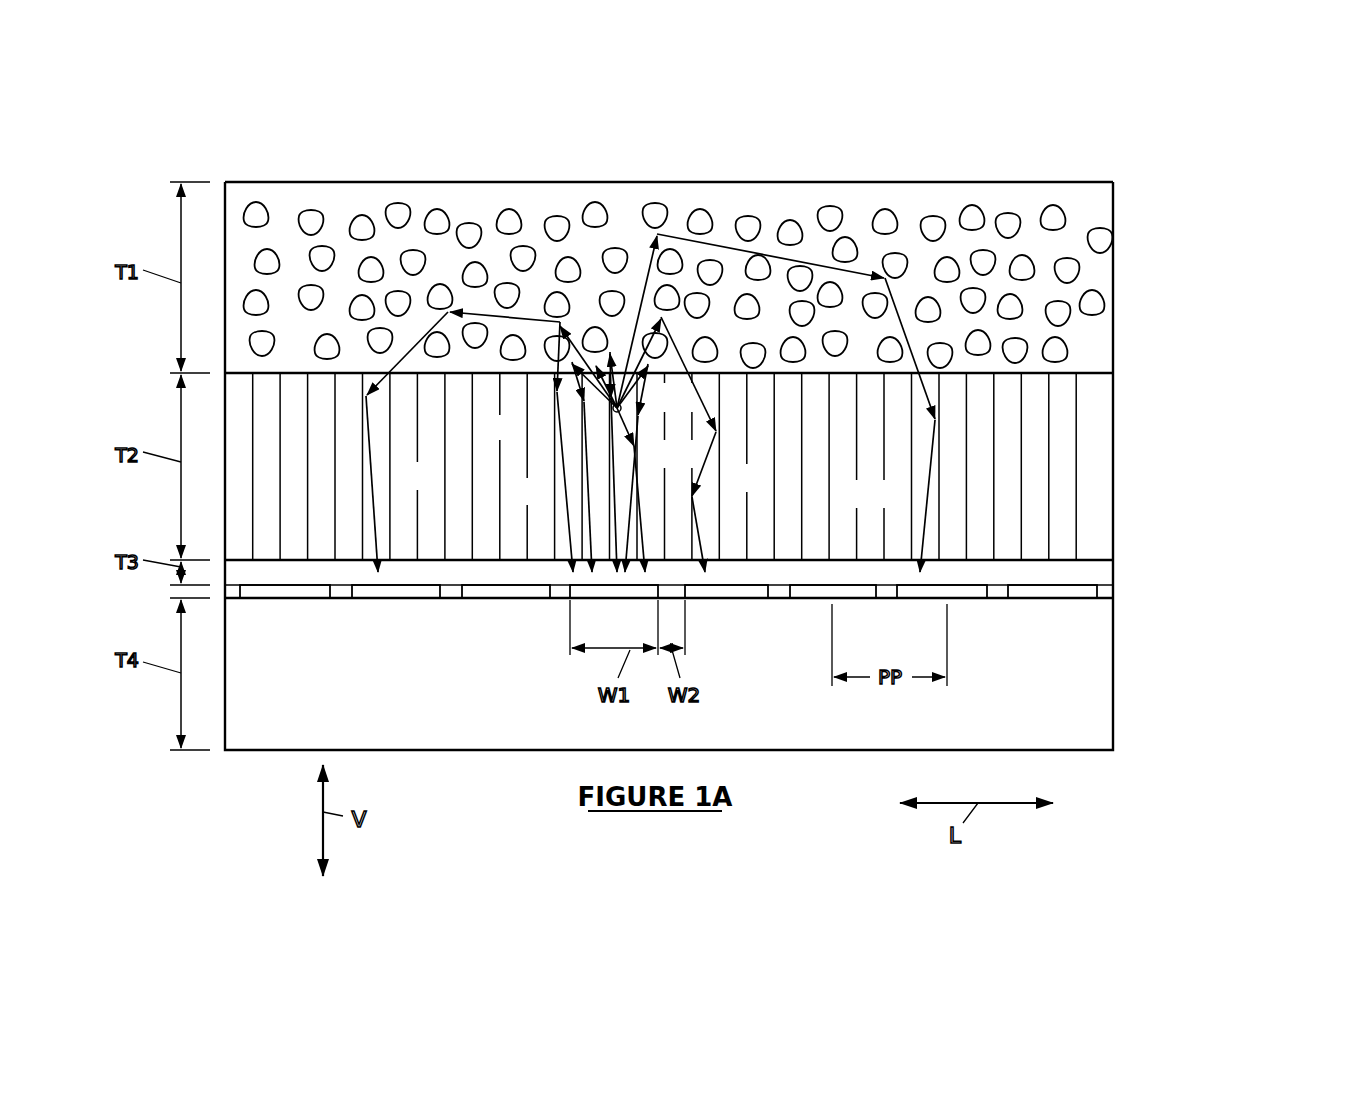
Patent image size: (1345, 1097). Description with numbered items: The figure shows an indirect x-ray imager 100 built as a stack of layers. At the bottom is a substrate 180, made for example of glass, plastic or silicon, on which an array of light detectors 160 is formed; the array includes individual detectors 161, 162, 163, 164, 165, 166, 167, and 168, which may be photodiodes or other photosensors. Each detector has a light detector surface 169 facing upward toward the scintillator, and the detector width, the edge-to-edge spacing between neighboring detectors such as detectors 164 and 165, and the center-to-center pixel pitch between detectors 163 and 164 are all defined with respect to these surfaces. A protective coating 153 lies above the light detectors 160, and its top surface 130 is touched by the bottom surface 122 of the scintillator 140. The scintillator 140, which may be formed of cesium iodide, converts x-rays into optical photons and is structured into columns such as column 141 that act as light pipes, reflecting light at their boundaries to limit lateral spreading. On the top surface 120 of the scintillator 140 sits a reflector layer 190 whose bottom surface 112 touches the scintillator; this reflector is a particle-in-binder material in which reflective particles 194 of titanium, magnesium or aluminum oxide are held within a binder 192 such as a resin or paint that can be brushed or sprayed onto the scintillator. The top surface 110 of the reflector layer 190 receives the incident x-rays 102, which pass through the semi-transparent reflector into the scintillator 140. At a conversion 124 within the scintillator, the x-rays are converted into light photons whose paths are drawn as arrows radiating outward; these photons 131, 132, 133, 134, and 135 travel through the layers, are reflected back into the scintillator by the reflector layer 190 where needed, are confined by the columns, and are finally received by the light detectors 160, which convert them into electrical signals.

The imager 100 is at (1026, 90).
The incident x-rays 102 is at (717, 124).
The top surface 110 is at (1098, 182).
The bottom surface 112 is at (1055, 374).
The top surface 120 is at (775, 438).
The bottom surface 122 is at (1063, 561).
The conversion 124 is at (612, 410).
The top surface 130 is at (1103, 559).
The photon 131 is at (566, 484).
The photon 132 is at (642, 404).
The photon 133 is at (708, 467).
The photon 134 is at (373, 471).
The photon 135 is at (926, 485).
The scintillator 140 is at (1087, 453).
The column 141 is at (648, 462).
The protective coating 153 is at (1097, 580).
The light detectors 160 is at (775, 625).
The detector 161 is at (1037, 595).
The detector 162 is at (970, 595).
The detector 163 is at (865, 595).
The detector 164 is at (730, 595).
The detector 165 is at (620, 593).
The detector 166 is at (495, 595).
The detector 167 is at (390, 595).
The detector 168 is at (275, 592).
The light detector surface 169 is at (570, 588).
The substrate 180 is at (1050, 705).
The reflector layer 190 is at (767, 264).
The binder 192 is at (1098, 272).
The reflective particles 194 is at (1098, 242).